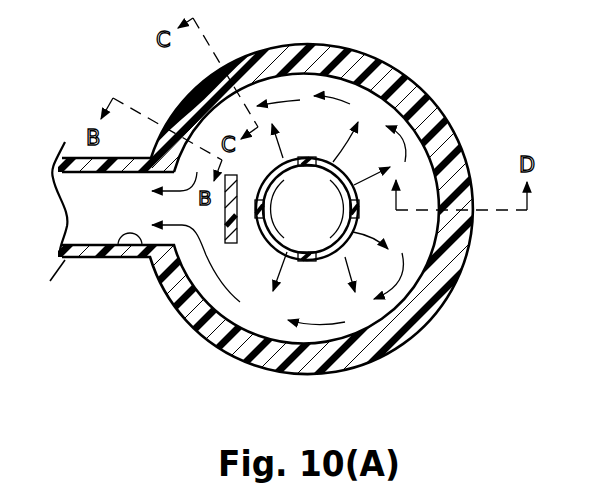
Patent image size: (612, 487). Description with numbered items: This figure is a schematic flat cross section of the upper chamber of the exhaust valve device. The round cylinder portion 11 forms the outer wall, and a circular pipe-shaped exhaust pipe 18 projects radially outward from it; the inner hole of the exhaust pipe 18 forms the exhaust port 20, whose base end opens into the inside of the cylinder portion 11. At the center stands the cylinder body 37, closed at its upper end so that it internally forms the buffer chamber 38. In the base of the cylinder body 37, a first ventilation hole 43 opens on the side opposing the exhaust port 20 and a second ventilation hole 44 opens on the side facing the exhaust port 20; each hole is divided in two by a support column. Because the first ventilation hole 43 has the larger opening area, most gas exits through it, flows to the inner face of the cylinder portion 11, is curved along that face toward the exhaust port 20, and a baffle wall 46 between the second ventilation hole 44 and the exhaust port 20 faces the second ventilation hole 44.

The cylinder portion 11 is at (407, 328).
The exhaust pipe 18 is at (78, 257).
The exhaust port 20 is at (118, 258).
The cylinder body 37 is at (307, 158).
The buffer chamber 38 is at (322, 198).
The first ventilation hole 43 is at (336, 210).
The second ventilation hole 44 is at (278, 209).
The baffle wall 46 is at (233, 244).